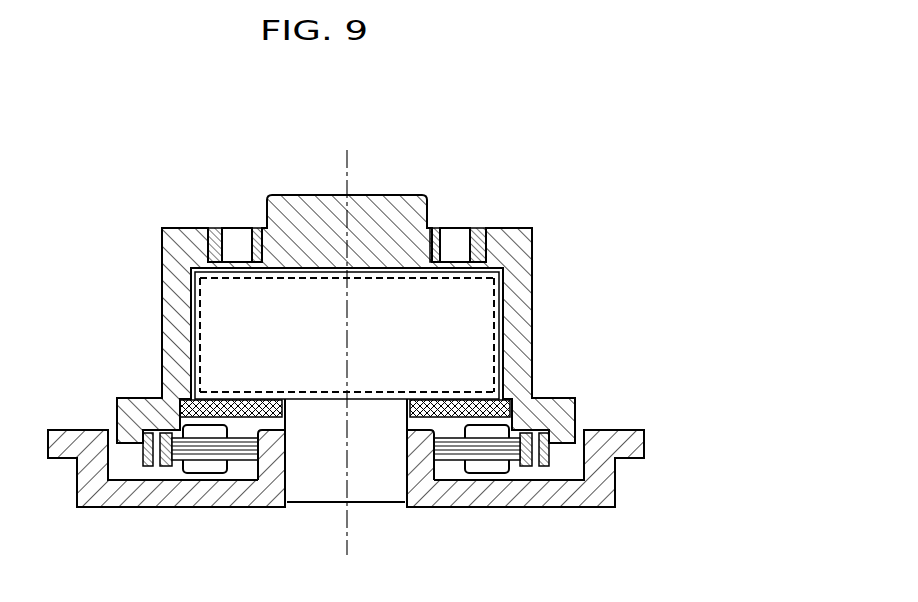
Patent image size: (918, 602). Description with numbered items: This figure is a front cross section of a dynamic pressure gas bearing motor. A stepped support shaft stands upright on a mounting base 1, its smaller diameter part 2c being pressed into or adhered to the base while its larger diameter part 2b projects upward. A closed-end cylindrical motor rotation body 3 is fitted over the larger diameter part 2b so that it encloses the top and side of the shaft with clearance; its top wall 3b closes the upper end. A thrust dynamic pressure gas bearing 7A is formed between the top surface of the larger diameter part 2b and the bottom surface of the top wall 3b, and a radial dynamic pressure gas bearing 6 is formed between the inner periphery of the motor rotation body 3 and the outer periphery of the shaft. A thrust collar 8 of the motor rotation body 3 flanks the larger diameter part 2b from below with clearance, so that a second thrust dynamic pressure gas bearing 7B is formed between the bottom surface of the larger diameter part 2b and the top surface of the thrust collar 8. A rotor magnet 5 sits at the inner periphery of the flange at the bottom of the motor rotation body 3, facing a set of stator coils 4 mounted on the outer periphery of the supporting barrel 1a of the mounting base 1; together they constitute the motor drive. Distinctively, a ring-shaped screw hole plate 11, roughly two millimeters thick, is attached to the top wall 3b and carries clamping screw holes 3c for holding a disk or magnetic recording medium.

The mounting base 1 is at (570, 497).
The supporting barrel 1a is at (430, 467).
The larger diameter part 2b is at (457, 318).
The smaller diameter part 2c is at (372, 490).
The motor rotation body 3 is at (156, 229).
The top wall 3b is at (200, 227).
The clamping screw holes 3c is at (235, 242).
The stator coils 4 is at (210, 447).
The rotor magnet 5 is at (528, 455).
The radial dynamic pressure gas bearing 6 is at (510, 342).
The thrust dynamic pressure gas bearing 7A is at (392, 270).
The thrust dynamic pressure gas bearing 7B is at (237, 395).
The thrust collar 8 is at (208, 397).
The screw hole plate 11 is at (485, 229).